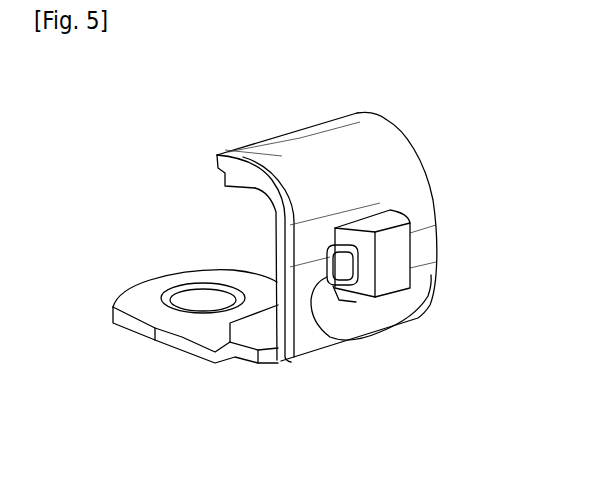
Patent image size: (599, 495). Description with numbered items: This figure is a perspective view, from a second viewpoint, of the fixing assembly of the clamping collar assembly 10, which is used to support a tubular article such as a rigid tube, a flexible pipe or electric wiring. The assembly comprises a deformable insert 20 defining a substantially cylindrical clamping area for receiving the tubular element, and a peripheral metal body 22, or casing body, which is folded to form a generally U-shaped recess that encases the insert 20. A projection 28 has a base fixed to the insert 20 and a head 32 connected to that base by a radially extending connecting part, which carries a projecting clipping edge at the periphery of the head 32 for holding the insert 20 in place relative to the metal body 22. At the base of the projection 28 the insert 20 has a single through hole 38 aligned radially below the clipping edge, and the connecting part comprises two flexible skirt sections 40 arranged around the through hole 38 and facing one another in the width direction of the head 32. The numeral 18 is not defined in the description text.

The clamping collar assembly 10 is at (308, 110).
The mounting hole 18 is at (196, 298).
The deformable insert 20 is at (273, 242).
The peripheral metal body 22 is at (225, 150).
The projection 28 is at (383, 237).
The head 32 is at (390, 280).
The through hole 38 is at (320, 320).
The flexible skirt sections 40 is at (380, 213).